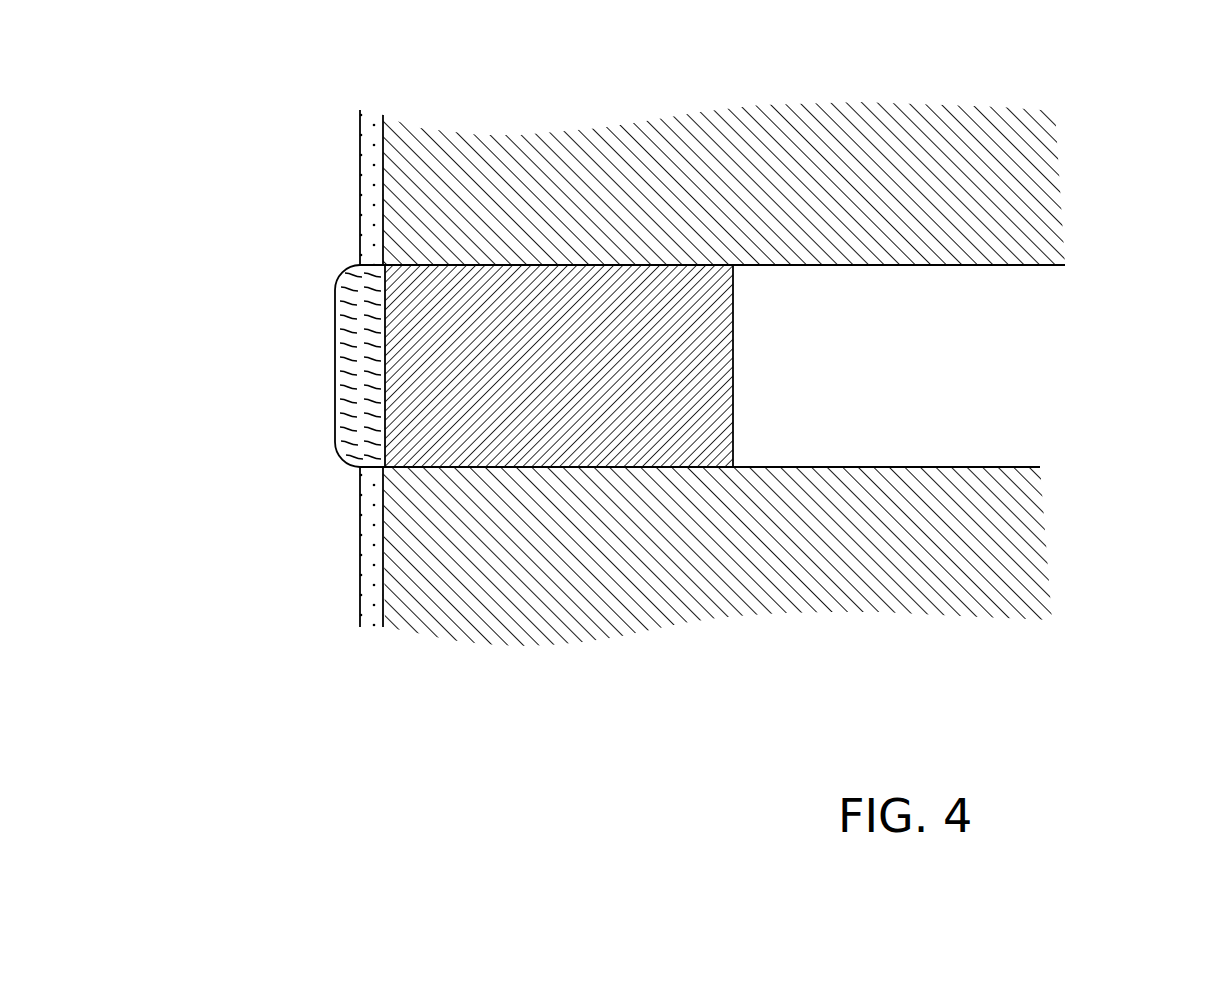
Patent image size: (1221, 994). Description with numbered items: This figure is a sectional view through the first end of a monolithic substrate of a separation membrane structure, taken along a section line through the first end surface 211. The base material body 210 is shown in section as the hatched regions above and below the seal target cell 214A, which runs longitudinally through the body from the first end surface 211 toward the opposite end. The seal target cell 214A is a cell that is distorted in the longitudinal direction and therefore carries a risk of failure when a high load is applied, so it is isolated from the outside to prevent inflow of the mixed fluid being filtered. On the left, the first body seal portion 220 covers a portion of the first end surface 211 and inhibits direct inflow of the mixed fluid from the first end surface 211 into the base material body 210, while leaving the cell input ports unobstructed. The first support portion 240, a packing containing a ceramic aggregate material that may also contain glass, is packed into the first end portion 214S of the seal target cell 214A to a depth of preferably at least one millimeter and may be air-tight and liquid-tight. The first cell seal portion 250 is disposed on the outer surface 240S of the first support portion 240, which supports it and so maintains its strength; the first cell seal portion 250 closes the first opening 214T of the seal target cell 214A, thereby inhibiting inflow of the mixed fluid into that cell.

The base material body 210 is at (1050, 172).
The first end surface 211 is at (383, 207).
The first body seal portion 220 is at (360, 160).
The first support portion 240 is at (632, 320).
The outer surface of the first support portion 240S is at (387, 302).
The first cell seal portion 250 is at (335, 356).
The seal target cell 214A is at (1028, 374).
The first end portion of the seal target cell 214S is at (700, 472).
The first opening of the seal target cell 214T is at (365, 402).